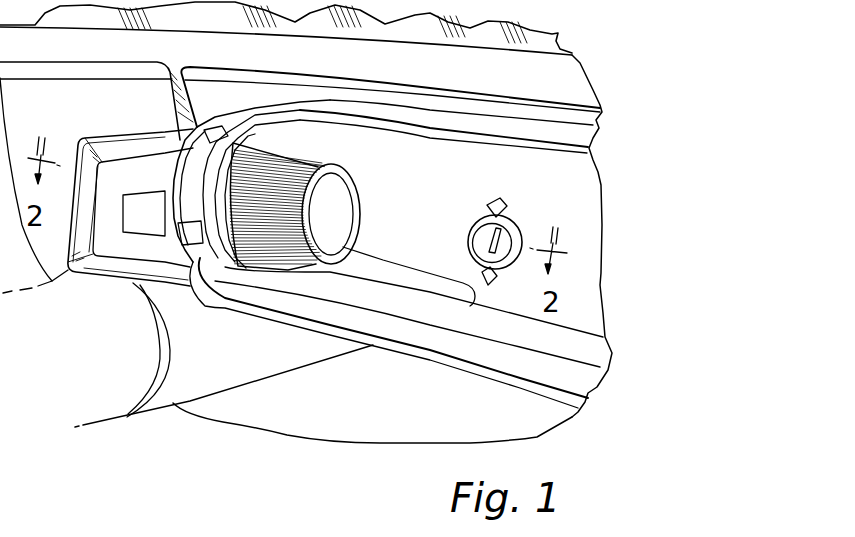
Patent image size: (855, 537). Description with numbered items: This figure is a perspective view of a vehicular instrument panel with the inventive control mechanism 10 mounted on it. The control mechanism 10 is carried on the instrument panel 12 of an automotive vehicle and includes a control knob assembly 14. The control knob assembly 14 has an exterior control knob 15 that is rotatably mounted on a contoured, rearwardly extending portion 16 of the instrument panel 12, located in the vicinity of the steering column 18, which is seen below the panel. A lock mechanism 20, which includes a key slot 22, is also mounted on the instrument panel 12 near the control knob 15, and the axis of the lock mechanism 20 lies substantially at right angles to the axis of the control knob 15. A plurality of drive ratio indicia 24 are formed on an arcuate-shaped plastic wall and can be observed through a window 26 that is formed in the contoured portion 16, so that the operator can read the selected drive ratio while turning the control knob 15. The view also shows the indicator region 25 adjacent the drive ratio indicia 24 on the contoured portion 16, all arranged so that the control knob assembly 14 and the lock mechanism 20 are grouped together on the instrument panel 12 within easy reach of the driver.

The control mechanism 10 is at (233, 110).
The instrument panel 12 is at (475, 157).
The control knob assembly 14 is at (336, 160).
The control knob 15 is at (225, 270).
The contoured rearwardly extending portion 16 is at (190, 248).
The steering column 18 is at (243, 367).
The lock mechanism 20 is at (521, 219).
The key slot 22 is at (490, 240).
The drive ratio indicia 24 is at (212, 132).
The indicator window 25 is at (188, 220).
The window 26 is at (204, 134).